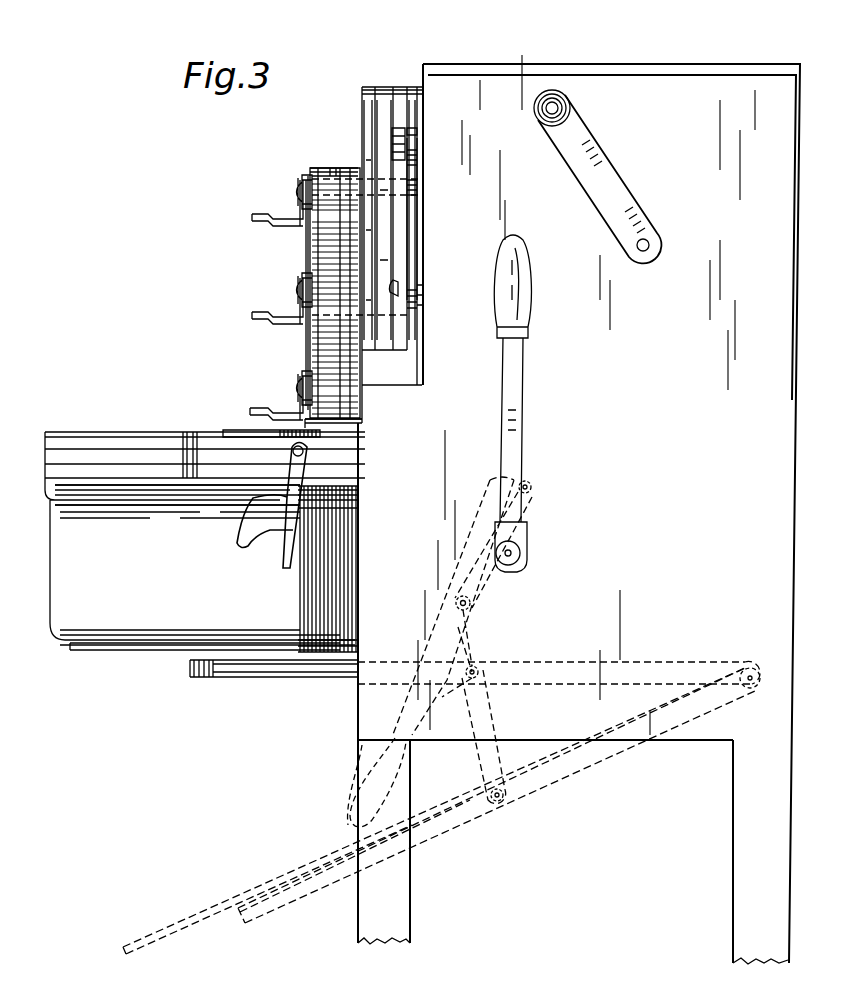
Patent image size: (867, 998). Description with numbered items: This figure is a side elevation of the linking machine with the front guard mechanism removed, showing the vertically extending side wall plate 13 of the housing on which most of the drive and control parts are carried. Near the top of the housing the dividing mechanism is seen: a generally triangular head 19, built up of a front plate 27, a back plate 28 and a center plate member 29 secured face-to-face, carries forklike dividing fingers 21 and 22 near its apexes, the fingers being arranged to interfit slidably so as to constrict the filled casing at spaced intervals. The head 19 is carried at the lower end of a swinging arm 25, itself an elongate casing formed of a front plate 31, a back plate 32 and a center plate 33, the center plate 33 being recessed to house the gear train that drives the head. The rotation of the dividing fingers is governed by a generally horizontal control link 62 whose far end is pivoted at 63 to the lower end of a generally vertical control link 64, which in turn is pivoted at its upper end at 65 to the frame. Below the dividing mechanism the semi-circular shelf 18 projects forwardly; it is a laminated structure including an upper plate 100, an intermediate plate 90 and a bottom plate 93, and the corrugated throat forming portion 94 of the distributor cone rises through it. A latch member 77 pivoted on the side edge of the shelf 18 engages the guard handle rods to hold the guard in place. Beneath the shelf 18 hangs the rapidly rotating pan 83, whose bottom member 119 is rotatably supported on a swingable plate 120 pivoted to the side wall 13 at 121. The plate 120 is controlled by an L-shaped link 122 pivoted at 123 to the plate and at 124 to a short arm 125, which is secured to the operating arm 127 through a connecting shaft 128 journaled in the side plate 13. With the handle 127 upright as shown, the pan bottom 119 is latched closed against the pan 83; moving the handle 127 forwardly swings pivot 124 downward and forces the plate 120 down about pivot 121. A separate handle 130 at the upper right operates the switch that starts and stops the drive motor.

The side wall plate member 13 is at (664, 393).
The semi-circular shelf 18 is at (74, 432).
The triangular head 19 is at (310, 262).
The dividing fingers 21 is at (293, 212).
The dividing fingers 22 is at (275, 224).
The swinging arm 25 is at (357, 131).
The front plate 27 is at (310, 170).
The back plate 28 is at (355, 378).
The center plate member 29 is at (333, 168).
The front plate 31 is at (366, 86).
The back plate 32 is at (413, 86).
The center plate 33 is at (386, 86).
The control link 62 is at (420, 288).
The pivot 63 is at (396, 289).
The control link 64 is at (408, 218).
The pivot 65 is at (398, 143).
The latch member 77 is at (282, 517).
The pan 83 is at (216, 563).
The intermediate plate 90 is at (108, 482).
The bottom plate 93 is at (150, 490).
The throat forming portion 94 is at (245, 428).
The upper plate 100 is at (114, 432).
The pan bottom member 119 is at (140, 652).
The swingable plate 120 is at (244, 678).
The pivot 121 is at (745, 666).
The L-shaped link 122 is at (487, 722).
The pivot 123 is at (497, 803).
The pivot 124 is at (533, 488).
The short arm 125 is at (477, 578).
The operating arm 127 is at (520, 352).
The connecting shaft 128 is at (521, 553).
The handle 130 is at (603, 170).